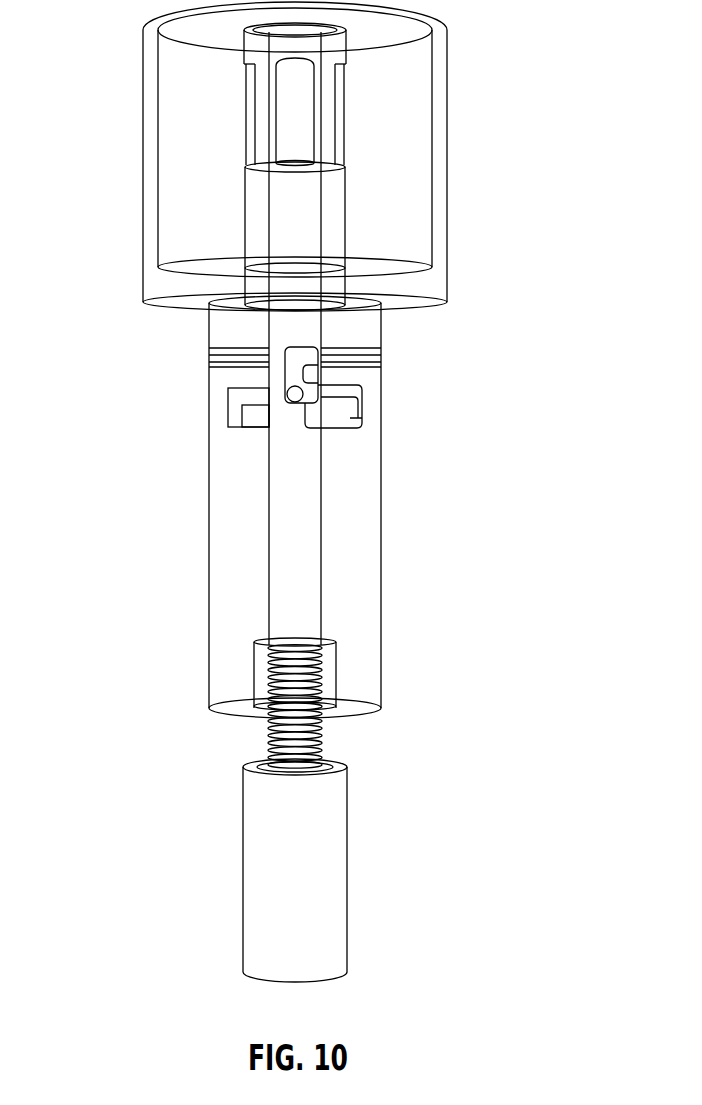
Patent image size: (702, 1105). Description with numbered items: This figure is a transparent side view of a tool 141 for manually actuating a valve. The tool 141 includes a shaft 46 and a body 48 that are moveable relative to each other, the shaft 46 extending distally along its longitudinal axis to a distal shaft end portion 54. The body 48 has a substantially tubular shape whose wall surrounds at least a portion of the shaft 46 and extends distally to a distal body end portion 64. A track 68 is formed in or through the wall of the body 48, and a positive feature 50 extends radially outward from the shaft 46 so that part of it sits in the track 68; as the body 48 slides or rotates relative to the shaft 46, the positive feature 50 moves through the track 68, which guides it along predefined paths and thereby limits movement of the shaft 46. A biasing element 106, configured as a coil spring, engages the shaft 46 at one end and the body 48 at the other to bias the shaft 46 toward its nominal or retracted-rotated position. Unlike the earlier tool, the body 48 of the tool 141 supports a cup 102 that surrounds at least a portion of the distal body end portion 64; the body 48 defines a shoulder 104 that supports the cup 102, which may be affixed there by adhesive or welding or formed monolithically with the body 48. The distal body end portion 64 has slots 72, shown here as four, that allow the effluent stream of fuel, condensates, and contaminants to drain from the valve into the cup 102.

The cup 102 is at (447, 117).
The distal shaft end portion 54 is at (295, 105).
The slots 72 is at (240, 95).
The distal body end portion 64 is at (347, 210).
The shoulder 104 is at (364, 303).
The tool 141 is at (462, 365).
The body 48 is at (380, 518).
The track 68 is at (272, 366).
The positive feature 50 is at (287, 396).
The biasing element 106 is at (268, 733).
The shaft 46 is at (322, 735).